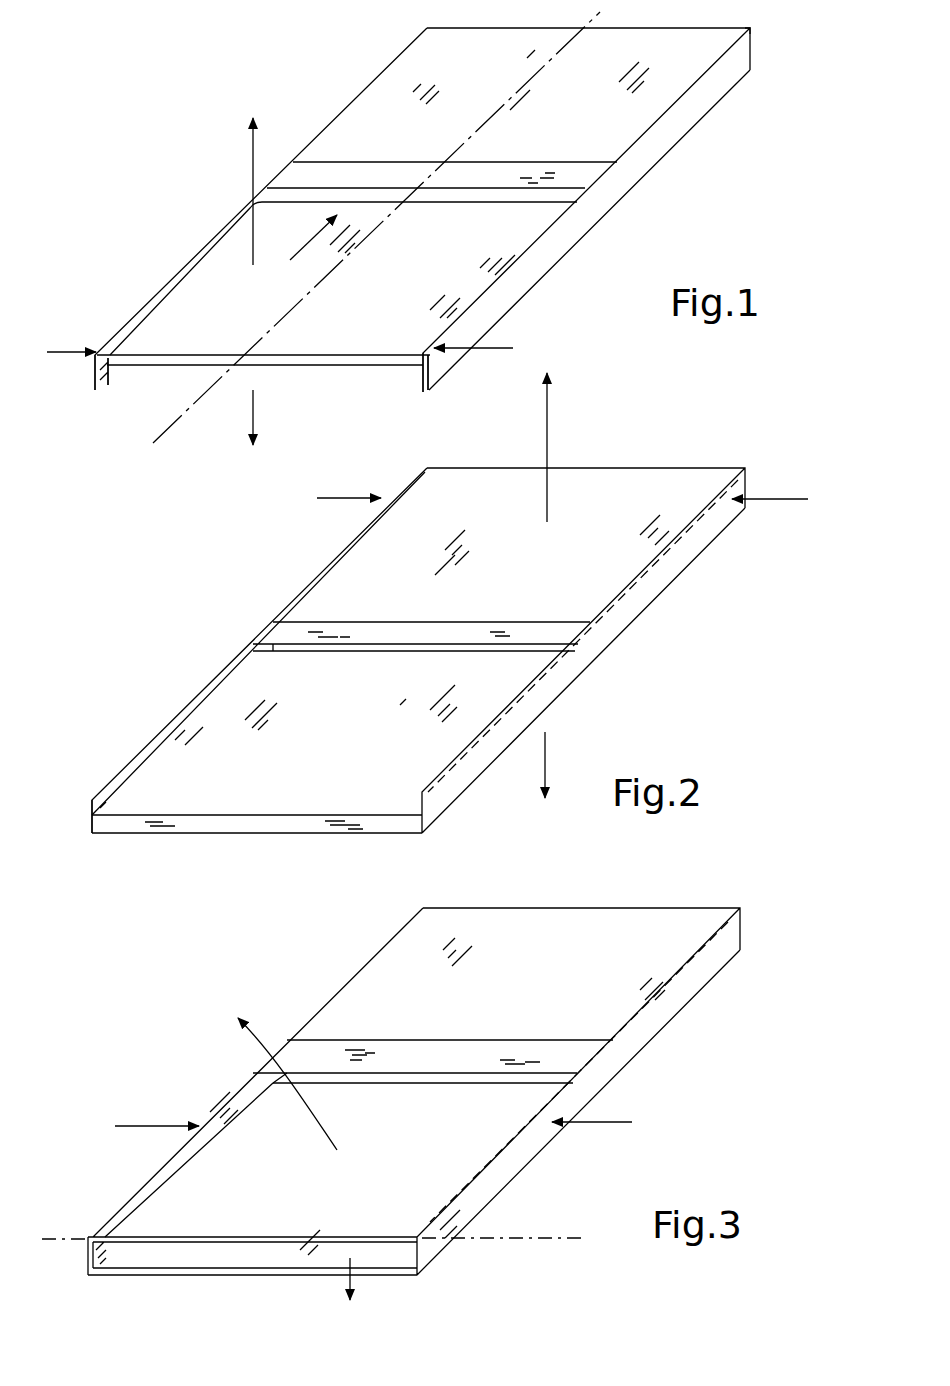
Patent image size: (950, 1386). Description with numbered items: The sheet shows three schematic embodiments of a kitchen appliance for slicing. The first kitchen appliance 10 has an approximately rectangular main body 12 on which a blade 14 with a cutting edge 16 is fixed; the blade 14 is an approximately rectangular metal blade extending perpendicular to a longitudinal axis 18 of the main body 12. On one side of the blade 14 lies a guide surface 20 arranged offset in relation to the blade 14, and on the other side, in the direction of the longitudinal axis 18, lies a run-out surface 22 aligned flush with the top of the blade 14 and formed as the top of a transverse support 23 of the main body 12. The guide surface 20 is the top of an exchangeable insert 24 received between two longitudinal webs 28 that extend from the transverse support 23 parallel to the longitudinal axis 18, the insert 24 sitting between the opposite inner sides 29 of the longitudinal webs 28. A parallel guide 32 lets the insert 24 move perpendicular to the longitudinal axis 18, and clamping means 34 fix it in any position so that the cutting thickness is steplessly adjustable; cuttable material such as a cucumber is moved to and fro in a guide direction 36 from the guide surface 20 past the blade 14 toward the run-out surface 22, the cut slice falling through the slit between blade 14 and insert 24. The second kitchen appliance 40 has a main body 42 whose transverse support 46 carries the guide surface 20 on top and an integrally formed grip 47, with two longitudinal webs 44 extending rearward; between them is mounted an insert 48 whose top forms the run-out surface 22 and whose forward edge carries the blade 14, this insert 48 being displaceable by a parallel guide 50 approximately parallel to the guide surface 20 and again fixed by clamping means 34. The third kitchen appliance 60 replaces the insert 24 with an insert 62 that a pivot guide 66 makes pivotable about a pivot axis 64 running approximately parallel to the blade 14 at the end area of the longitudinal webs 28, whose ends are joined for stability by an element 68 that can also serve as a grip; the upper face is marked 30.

In FIG. 1, the kitchen appliance 10 is at (203, 108).
In FIG. 1, the main body 12 is at (640, 182).
In FIG. 3, the main body 12 is at (653, 1035).
In FIG. 1, the blade 14 is at (603, 155).
In FIG. 2, the blade 14 is at (380, 633).
In FIG. 3, the blade 14 is at (593, 1050).
In FIG. 1, the cutting edge 16 is at (548, 182).
In FIG. 1, the longitudinal axis 18 is at (593, 12).
In FIG. 1, the guide surface 20 is at (467, 248).
In FIG. 2, the guide surface 20 is at (423, 760).
In FIG. 1, the run-out surface 22 is at (380, 92).
In FIG. 2, the run-out surface 22 is at (658, 543).
In FIG. 1, the transverse support 23 is at (710, 42).
In FIG. 1, the exchangeable insert 24 is at (170, 283).
In FIG. 1, the longitudinal webs 28 is at (745, 66).
In FIG. 3, the longitudinal webs 28 is at (723, 947).
In FIG. 1, the inner sides 29 is at (102, 378).
In FIG. 2, the inner sides 29 is at (112, 774).
In FIG. 3, the upper face 30 is at (693, 903).
In FIG. 1, the parallel guide 32 is at (252, 163).
In FIG. 1, the clamping means 34 is at (63, 352).
In FIG. 2, the clamping means 34 is at (317, 497).
In FIG. 3, the clamping means 34 is at (147, 1124).
In FIG. 1, the guide direction 36 is at (307, 240).
In FIG. 2, the kitchen appliance 40 is at (260, 592).
In FIG. 2, the main body 42 is at (653, 602).
In FIG. 2, the longitudinal webs 44 is at (208, 688).
In FIG. 2, the transverse support 46 is at (270, 820).
In FIG. 2, the grip 47 is at (215, 823).
In FIG. 2, the insert 48 is at (680, 483).
In FIG. 2, the parallel guide 50 is at (550, 430).
In FIG. 3, the kitchen appliance 60 is at (200, 1045).
In FIG. 3, the insert 62 is at (517, 1103).
In FIG. 3, the pivot axis 64 is at (560, 1238).
In FIG. 3, the pivot guide 66 is at (267, 1037).
In FIG. 3, the element 68 is at (257, 1273).